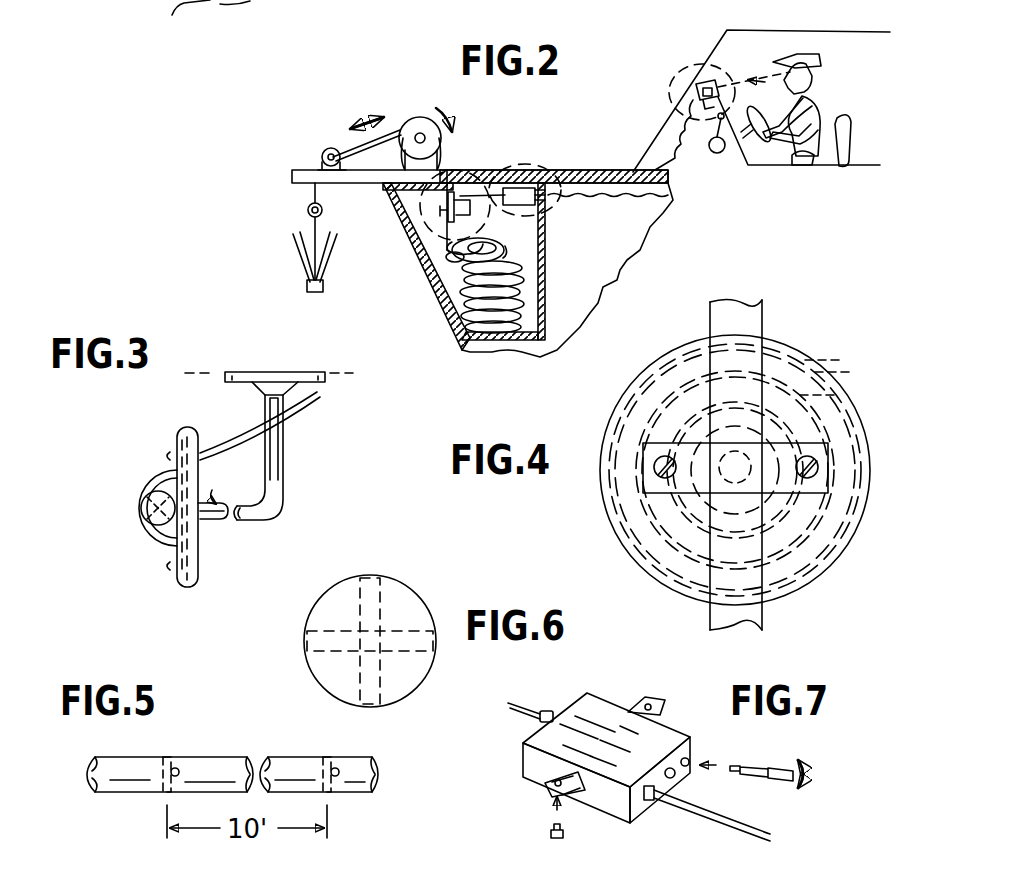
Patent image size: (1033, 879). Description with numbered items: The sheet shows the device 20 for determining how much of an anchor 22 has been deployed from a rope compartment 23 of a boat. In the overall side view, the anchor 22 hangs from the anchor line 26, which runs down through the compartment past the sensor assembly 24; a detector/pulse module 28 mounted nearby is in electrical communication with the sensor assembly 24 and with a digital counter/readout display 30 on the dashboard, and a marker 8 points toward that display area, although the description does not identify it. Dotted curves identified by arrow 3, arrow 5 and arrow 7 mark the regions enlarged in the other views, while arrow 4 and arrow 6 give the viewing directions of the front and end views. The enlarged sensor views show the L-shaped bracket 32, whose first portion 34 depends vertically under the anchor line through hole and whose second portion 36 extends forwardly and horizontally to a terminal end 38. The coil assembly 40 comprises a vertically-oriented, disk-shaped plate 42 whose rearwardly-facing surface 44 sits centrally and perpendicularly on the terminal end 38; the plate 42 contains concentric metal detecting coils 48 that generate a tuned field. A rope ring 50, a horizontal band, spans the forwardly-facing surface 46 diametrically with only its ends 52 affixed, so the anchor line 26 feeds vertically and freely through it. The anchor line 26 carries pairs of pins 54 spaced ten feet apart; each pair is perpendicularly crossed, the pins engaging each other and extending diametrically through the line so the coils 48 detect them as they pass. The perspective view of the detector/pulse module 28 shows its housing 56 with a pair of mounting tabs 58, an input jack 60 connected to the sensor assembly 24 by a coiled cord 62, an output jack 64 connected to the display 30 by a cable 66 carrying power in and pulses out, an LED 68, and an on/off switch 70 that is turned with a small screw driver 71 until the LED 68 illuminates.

In FIG. 2, the arrow 3 is at (471, 162).
In FIG. 3, the arrow 4 is at (108, 486).
In FIG. 2, the arrow 5 is at (507, 249).
In FIG. 5, the arrow 6 is at (392, 771).
In FIG. 2, the arrow 7 is at (554, 160).
In FIG. 2, the receiver unit 8 is at (682, 78).
In FIG. 2, the device 20 is at (412, 112).
In FIG. 2, the anchor 22 is at (302, 254).
In FIG. 2, the rope compartment 23 is at (440, 289).
In FIG. 2, the sensor assembly 24 is at (432, 218).
In FIG. 3, the sensor assembly 24 is at (135, 460).
In FIG. 2, the anchor line 26 is at (522, 292).
In FIG. 3, the anchor line 26 is at (142, 518).
In FIG. 4, the anchor line 26 is at (768, 325).
In FIG. 6, the anchor line 26 is at (415, 575).
In FIG. 5, the anchor line 26 is at (230, 744).
In FIG. 2, the detector/pulse module 28 is at (523, 170).
In FIG. 7, the detector/pulse module 28 is at (578, 734).
In FIG. 2, the digital counter/readout display 30 is at (708, 68).
In FIG. 3, the bracket 32 is at (283, 470).
In FIG. 3, the first portion 34 is at (282, 425).
In FIG. 3, the second portion 36 is at (258, 515).
In FIG. 3, the terminal end 38 is at (205, 522).
In FIG. 3, the coil assembly 40 is at (193, 575).
In FIG. 4, the coil assembly 40 is at (668, 372).
In FIG. 4, the plate 42 is at (612, 524).
In FIG. 3, the rearwardly-facing surface 44 is at (205, 470).
In FIG. 3, the forwardly-facing surface 46 is at (191, 432).
In FIG. 4, the forwardly-facing surface 46 is at (650, 555).
In FIG. 3, the metal detecting coils 48 is at (176, 582).
In FIG. 4, the metal detecting coils 48 is at (830, 392).
In FIG. 3, the rope ring 50 is at (135, 491).
In FIG. 4, the rope ring 50 is at (690, 440).
In FIG. 3, the ends 52 is at (176, 448).
In FIG. 4, the ends 52 is at (644, 468).
In FIG. 6, the pairs of pins 54 is at (345, 610).
In FIG. 5, the pairs of pins 54 is at (166, 759).
In FIG. 7, the housing 56 is at (534, 732).
In FIG. 7, the tabs 58 is at (657, 698).
In FIG. 7, the input jack 60 is at (550, 709).
In FIG. 7, the coiled cord 62 is at (520, 694).
In FIG. 7, the output jack 64 is at (648, 800).
In FIG. 7, the cable 66 is at (722, 823).
In FIG. 7, the LED 68 is at (677, 777).
In FIG. 7, the on/off switch 70 is at (690, 760).
In FIG. 7, the small screw driver 71 is at (766, 766).